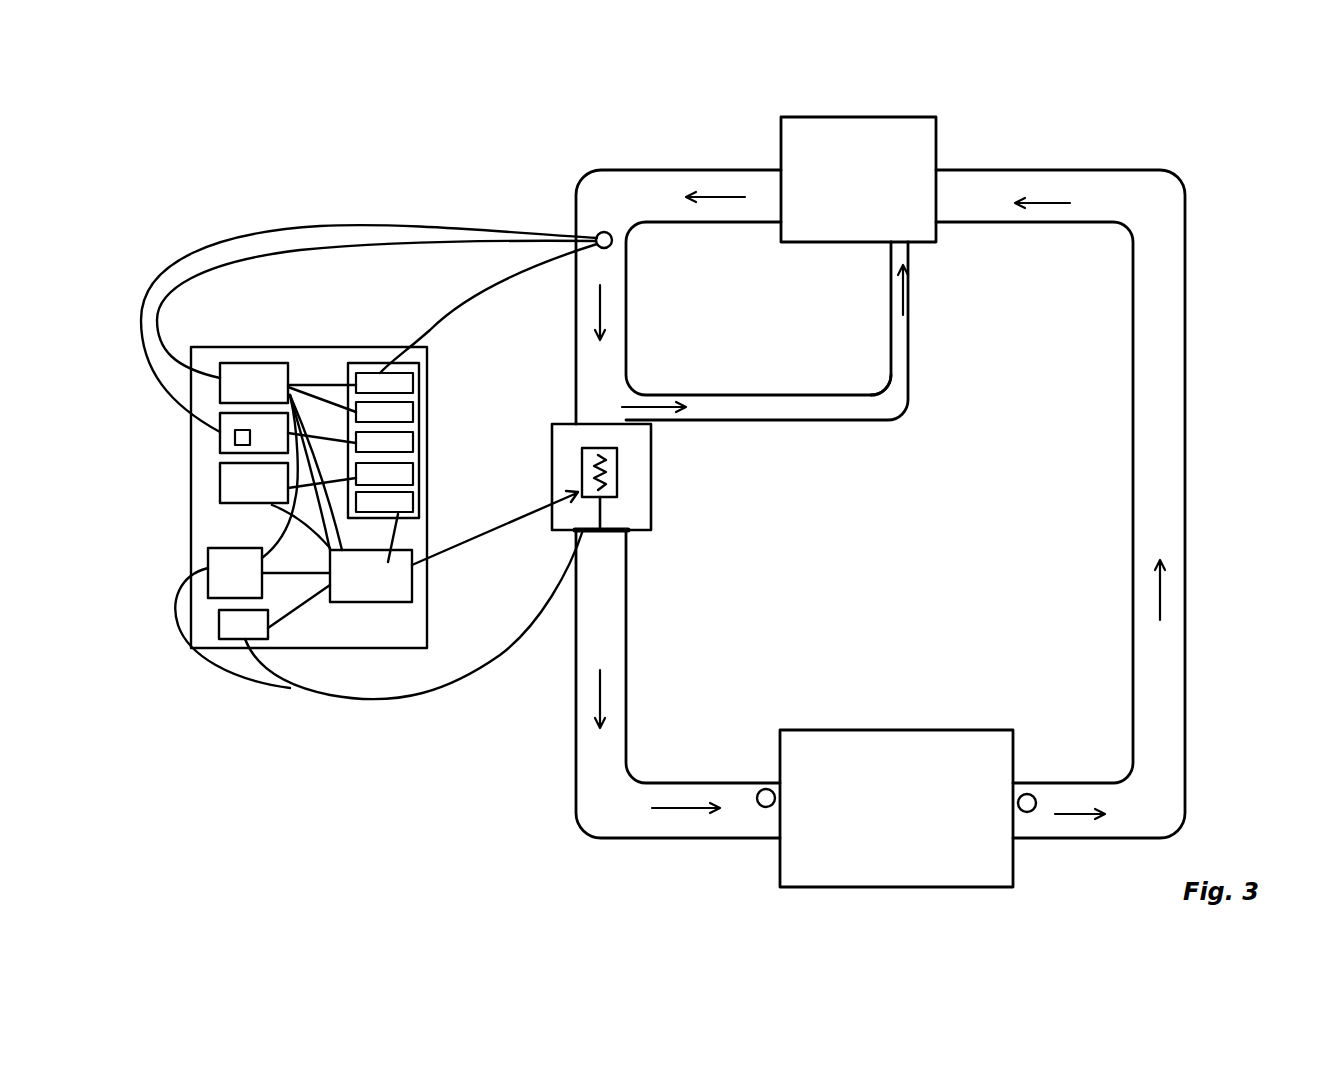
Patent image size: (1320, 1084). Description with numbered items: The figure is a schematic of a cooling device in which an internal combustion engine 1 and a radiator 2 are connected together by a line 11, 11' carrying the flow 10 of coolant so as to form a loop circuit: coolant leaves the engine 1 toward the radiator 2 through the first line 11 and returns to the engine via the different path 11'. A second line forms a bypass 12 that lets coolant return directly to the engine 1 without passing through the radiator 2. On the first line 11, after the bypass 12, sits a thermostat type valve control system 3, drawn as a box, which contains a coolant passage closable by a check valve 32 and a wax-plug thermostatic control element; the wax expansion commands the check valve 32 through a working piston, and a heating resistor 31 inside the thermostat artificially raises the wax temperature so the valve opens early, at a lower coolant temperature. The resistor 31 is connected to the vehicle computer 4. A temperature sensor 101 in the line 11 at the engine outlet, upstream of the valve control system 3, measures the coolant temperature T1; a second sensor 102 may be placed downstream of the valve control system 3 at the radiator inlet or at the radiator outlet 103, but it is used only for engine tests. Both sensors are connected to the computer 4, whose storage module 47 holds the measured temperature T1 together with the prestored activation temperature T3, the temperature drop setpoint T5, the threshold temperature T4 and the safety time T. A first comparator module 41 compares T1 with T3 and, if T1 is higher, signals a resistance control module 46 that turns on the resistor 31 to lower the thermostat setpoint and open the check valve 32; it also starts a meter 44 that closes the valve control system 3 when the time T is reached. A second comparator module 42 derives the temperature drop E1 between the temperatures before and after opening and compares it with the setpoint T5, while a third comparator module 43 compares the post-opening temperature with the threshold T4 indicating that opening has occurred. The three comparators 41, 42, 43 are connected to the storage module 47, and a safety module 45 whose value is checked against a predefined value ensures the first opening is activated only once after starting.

The internal combustion engine 1 is at (913, 160).
The radiator 2 is at (952, 800).
The valve control system 3 is at (651, 497).
The computer 4 is at (191, 540).
The flow 10 is at (1047, 200).
The line 11 is at (880, 441).
The line 11' is at (955, 502).
The bypass 12 is at (887, 394).
The heating resistor 31 is at (612, 461).
The check valve 32 is at (627, 530).
The first comparator module 41 is at (253, 375).
The second comparator module 42 is at (220, 445).
The third comparator module 43 is at (248, 488).
The meter 44 is at (220, 562).
The safety module 45 is at (233, 628).
The resistance control module 46 is at (395, 593).
The storage module 47 is at (367, 362).
The temperature sensor 101 is at (598, 236).
The second sensor 102 is at (762, 806).
The outlet of the radiator 103 is at (1031, 811).
The temperature drop E1 is at (235, 437).
The coolant temperature at engine outlet T1 is at (405, 381).
The activation temperature T3 is at (405, 412).
The temperature drop setpoint T5 is at (405, 443).
The threshold temperature T4 is at (405, 474).
The time T is at (395, 503).